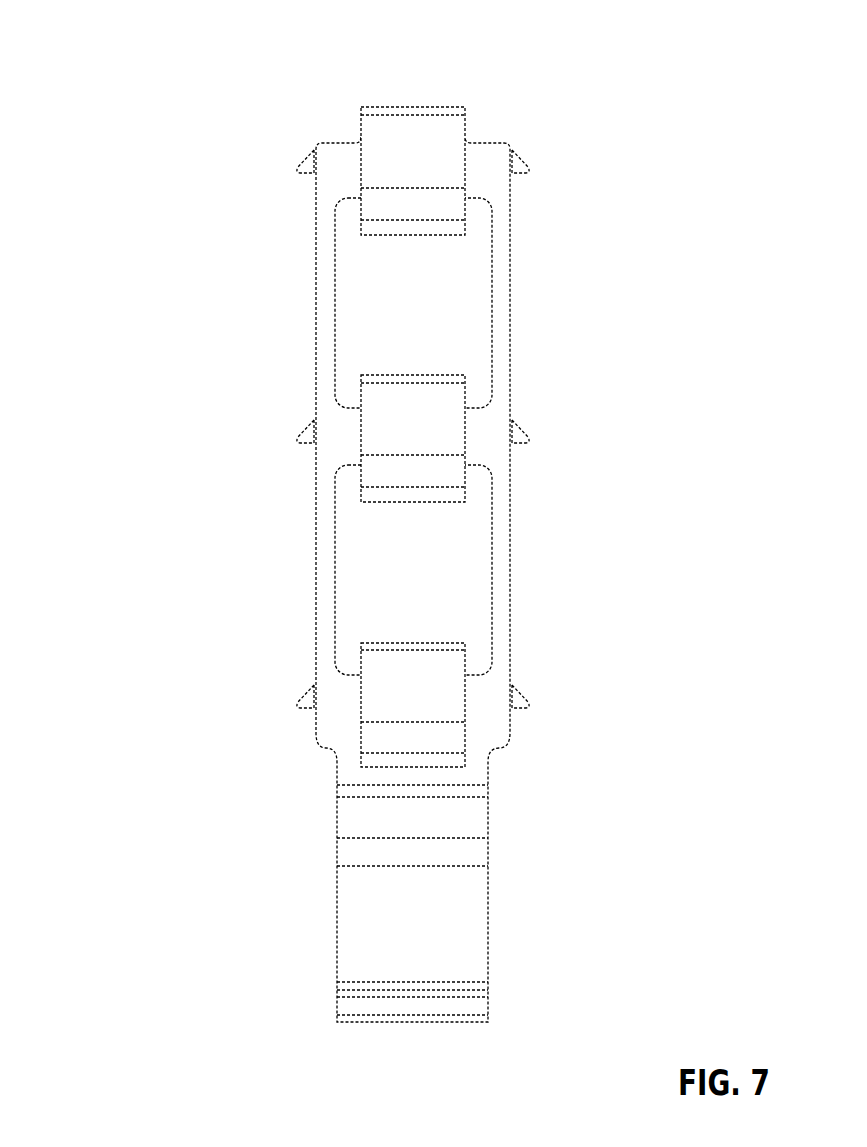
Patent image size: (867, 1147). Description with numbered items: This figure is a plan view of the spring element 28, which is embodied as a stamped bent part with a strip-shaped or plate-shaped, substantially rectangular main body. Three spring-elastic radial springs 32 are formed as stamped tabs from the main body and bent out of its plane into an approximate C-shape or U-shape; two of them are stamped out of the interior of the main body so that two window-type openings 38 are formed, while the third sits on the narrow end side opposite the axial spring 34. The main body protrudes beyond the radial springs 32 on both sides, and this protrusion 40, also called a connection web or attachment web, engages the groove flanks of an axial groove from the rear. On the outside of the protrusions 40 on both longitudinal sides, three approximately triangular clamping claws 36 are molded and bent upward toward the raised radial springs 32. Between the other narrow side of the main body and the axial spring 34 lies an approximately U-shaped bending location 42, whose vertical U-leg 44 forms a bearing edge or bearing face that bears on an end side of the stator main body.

The spring element 28 is at (114, 188).
The radial spring 32 is at (412, 133).
The axial spring 34 is at (462, 911).
The clamping claw 36 is at (305, 160).
The window-type opening 38 is at (455, 268).
The protrusion 40 is at (322, 292).
The bending location 42 is at (466, 818).
The U-leg 44 is at (412, 852).